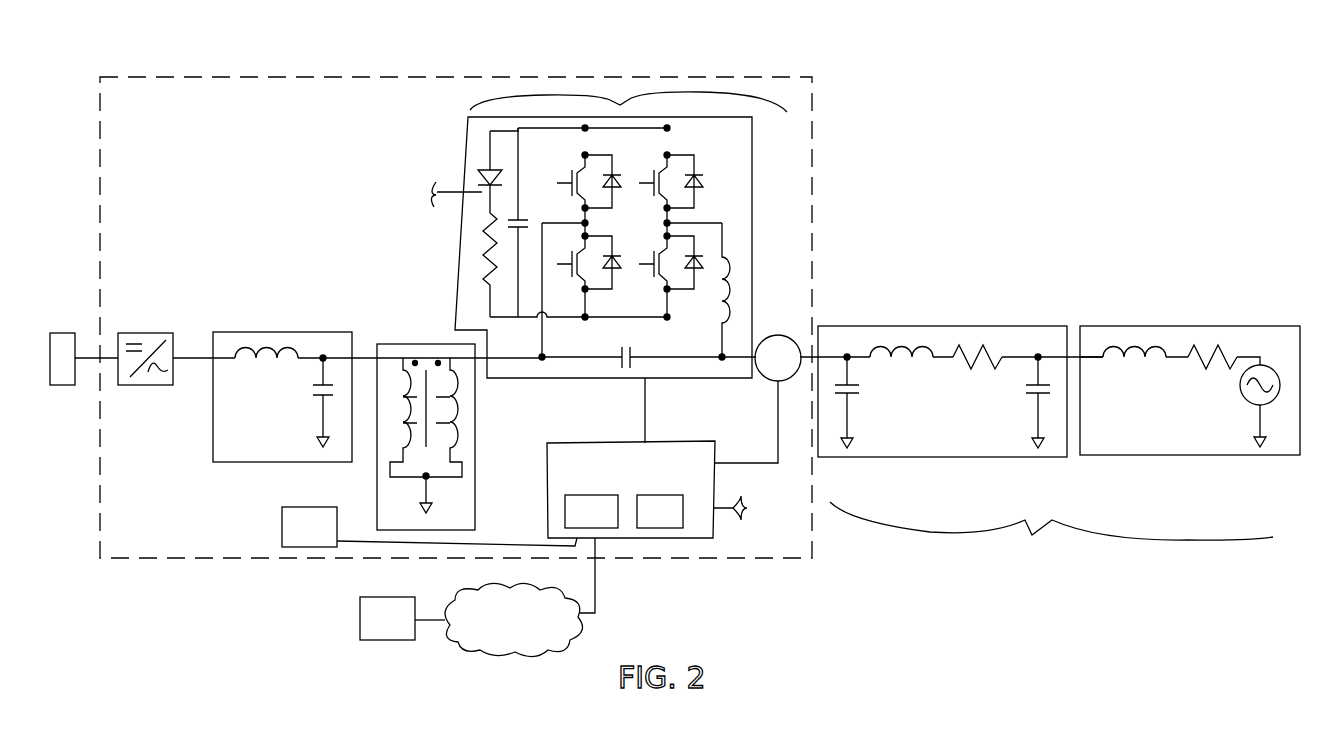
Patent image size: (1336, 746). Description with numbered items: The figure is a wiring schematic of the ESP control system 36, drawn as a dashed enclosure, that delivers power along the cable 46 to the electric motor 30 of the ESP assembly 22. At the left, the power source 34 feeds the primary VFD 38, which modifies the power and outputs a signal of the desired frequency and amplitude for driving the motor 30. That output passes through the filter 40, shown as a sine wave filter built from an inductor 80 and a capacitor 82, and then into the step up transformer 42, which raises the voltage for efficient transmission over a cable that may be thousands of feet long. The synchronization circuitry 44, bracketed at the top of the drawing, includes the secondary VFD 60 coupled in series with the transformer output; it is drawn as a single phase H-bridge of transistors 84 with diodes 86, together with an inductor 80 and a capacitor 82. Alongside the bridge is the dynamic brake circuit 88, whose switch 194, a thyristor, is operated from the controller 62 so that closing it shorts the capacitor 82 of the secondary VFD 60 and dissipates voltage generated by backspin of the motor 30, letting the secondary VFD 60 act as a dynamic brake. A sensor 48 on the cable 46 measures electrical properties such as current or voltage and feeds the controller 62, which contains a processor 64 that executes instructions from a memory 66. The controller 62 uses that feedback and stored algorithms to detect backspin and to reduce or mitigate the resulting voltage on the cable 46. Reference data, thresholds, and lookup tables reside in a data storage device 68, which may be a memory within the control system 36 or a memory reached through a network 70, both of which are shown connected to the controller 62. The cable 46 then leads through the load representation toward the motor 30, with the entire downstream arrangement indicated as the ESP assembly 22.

The ESP assembly 22 is at (1051, 537).
The electric motor 30 is at (1191, 326).
The power source 34 is at (62, 333).
The ESP control system 36 is at (673, 77).
The primary VFD 38 is at (143, 333).
The filter 40 is at (283, 332).
The step up transformer 42 is at (427, 344).
The synchronization circuitry 44 is at (628, 93).
The cable 46 is at (943, 326).
The sensor 48 is at (779, 333).
The secondary VFD 60 is at (540, 380).
The controller 62 is at (547, 487).
The processor 64 is at (582, 496).
The memory 66 is at (662, 495).
The data storage device 68 is at (282, 527).
The network 70 is at (526, 657).
The inductor 80 is at (270, 350).
The capacitor 82 is at (312, 397).
The transistor 84 is at (572, 183).
The diode 86 is at (703, 172).
The dynamic brake circuit 88 is at (424, 239).
The switch 194 is at (485, 168).